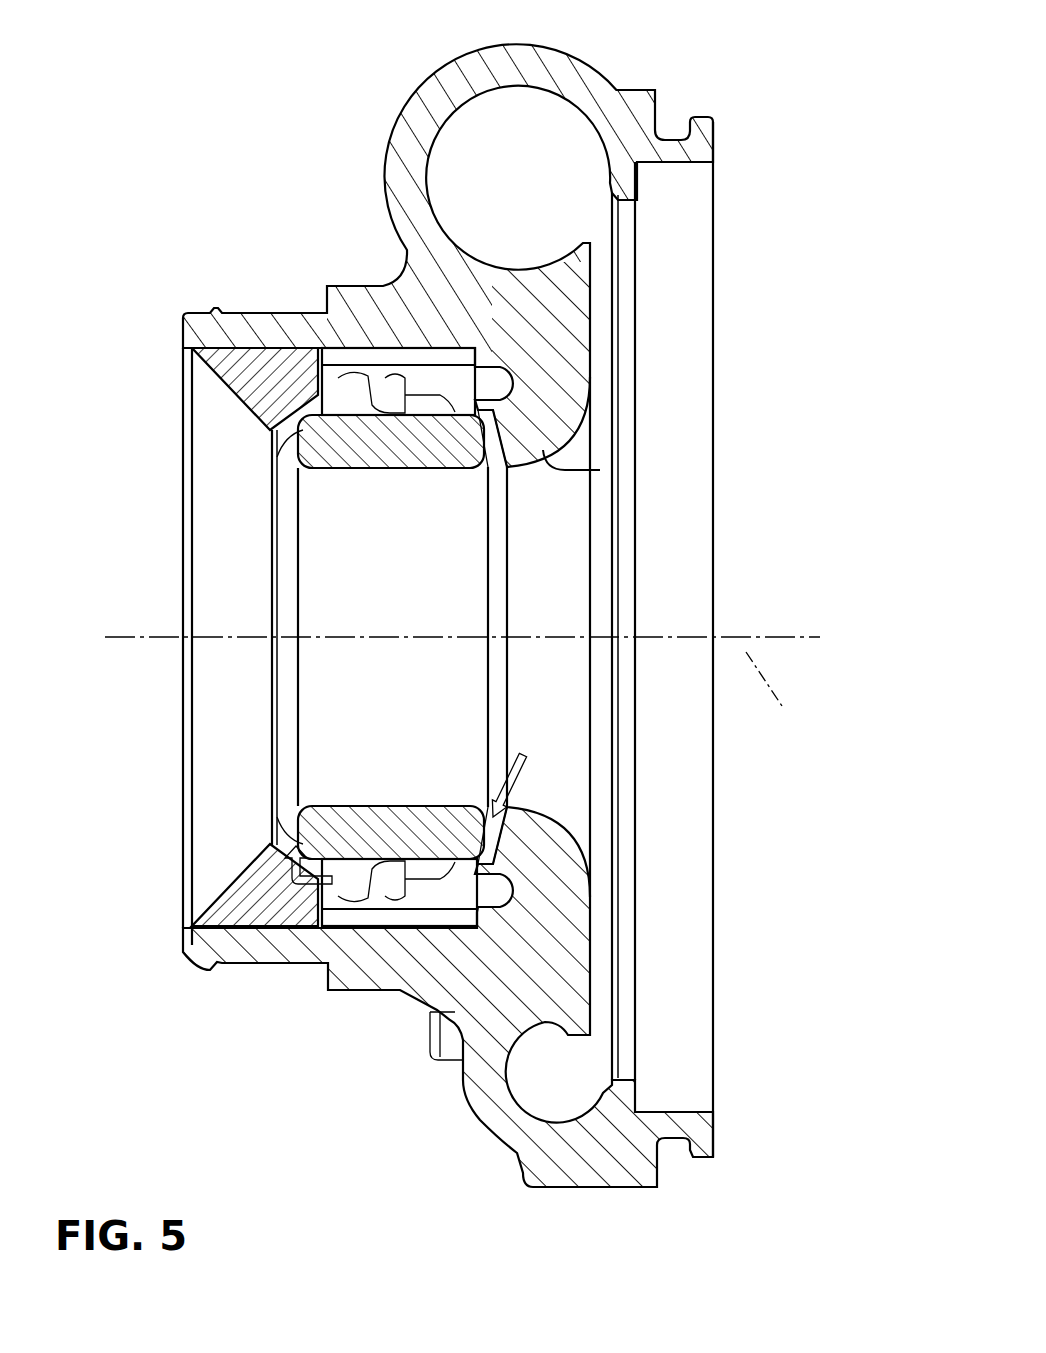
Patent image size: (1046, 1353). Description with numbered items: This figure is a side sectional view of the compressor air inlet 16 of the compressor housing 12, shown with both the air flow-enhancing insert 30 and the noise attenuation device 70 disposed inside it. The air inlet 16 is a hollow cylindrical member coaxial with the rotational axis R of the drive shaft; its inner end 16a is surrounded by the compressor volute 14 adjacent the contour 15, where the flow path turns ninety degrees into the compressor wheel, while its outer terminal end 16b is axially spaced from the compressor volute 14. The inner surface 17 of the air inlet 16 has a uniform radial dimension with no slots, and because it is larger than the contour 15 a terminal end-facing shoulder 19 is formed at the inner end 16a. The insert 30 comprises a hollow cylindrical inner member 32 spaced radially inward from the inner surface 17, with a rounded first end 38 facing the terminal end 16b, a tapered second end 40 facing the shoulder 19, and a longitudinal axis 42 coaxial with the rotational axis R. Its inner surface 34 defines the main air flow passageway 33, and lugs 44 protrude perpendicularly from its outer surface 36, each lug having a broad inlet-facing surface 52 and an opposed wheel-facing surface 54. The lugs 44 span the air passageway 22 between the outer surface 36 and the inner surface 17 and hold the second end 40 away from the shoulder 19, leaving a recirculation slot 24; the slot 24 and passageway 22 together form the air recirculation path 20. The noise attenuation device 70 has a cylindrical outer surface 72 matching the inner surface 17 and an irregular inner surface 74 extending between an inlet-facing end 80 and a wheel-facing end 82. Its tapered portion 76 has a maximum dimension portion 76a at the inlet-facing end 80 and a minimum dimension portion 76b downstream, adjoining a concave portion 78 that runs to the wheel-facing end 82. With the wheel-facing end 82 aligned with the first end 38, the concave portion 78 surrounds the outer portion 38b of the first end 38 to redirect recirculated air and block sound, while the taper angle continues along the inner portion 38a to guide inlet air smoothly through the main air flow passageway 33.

The compressor housing 12 is at (455, 78).
The compressor volute 14 is at (528, 151).
The contour 15 is at (600, 470).
The air inlet 16 is at (337, 308).
The inner end 16a is at (450, 343).
The terminal end 16b is at (183, 330).
The inner surface 17 is at (375, 325).
The shoulder 19 is at (517, 1023).
The air recirculation path 20 is at (490, 837).
The air passageway 22 is at (399, 952).
The recirculation slot 24 is at (595, 838).
The air flow-enhancing insert 30 is at (472, 598).
The inner member 32 is at (648, 637).
The main air flow passageway 33 is at (398, 576).
The inner surface 34 is at (345, 808).
The outer surface 36 is at (468, 858).
The first end 38 is at (300, 705).
The inner portion 38a is at (323, 468).
The outer portion 38b is at (272, 470).
The second end 40 is at (485, 440).
The longitudinal axis 42 is at (792, 695).
The lugs 44 is at (395, 397).
The inlet-facing surface 52 is at (295, 395).
The wheel-facing surface 54 is at (477, 882).
The noise attenuation device 70 is at (205, 713).
The outer surface 72 is at (250, 943).
The inner surface 74 is at (215, 868).
The tapered portion 76 is at (225, 350).
The maximum dimension portion 76a is at (210, 378).
The minimum dimension portion 76b is at (270, 430).
The concave portion 78 is at (275, 352).
The inlet-facing end 80 is at (185, 927).
The wheel-facing end 82 is at (328, 907).
The rotational axis R is at (800, 695).